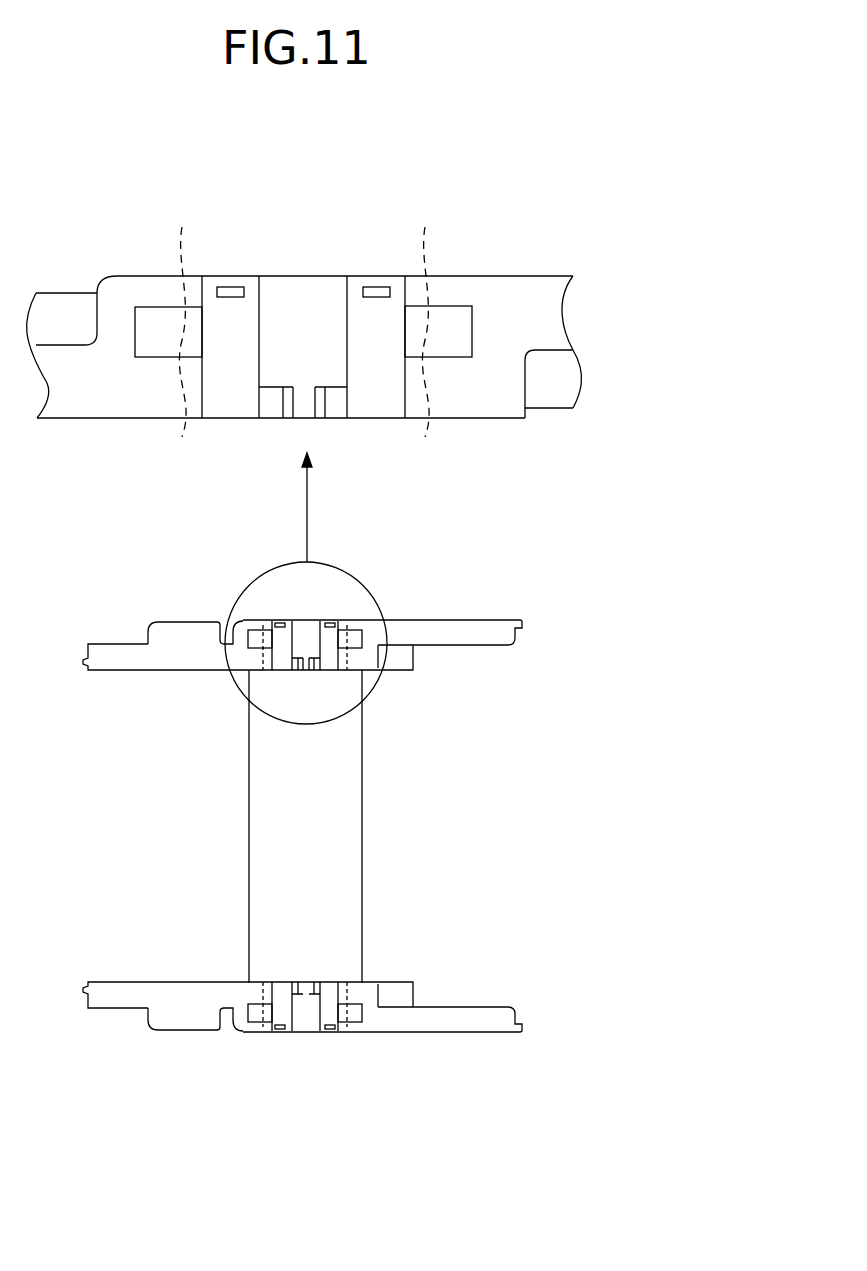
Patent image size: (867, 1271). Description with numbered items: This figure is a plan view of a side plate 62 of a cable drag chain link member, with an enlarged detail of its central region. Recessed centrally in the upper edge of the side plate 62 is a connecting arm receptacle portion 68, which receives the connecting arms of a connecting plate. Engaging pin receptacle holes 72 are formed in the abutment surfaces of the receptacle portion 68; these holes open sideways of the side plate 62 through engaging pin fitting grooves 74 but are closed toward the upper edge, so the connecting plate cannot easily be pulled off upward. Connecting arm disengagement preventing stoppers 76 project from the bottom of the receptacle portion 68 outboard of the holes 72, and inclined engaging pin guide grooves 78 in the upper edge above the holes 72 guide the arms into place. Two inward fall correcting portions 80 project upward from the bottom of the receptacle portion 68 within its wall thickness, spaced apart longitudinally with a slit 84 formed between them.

The side plate 62 is at (473, 610).
The connecting arm receptacle portion 68 is at (310, 286).
The engaging pin receptacle hole 72 is at (202, 468).
The engaging pin fitting groove 74 is at (307, 613).
The connecting arm disengagement preventing stopper 76 is at (233, 290).
The engaging pin guide groove 78 is at (153, 316).
The inward fall correcting portion 80 is at (272, 403).
The slit 84 is at (302, 402).